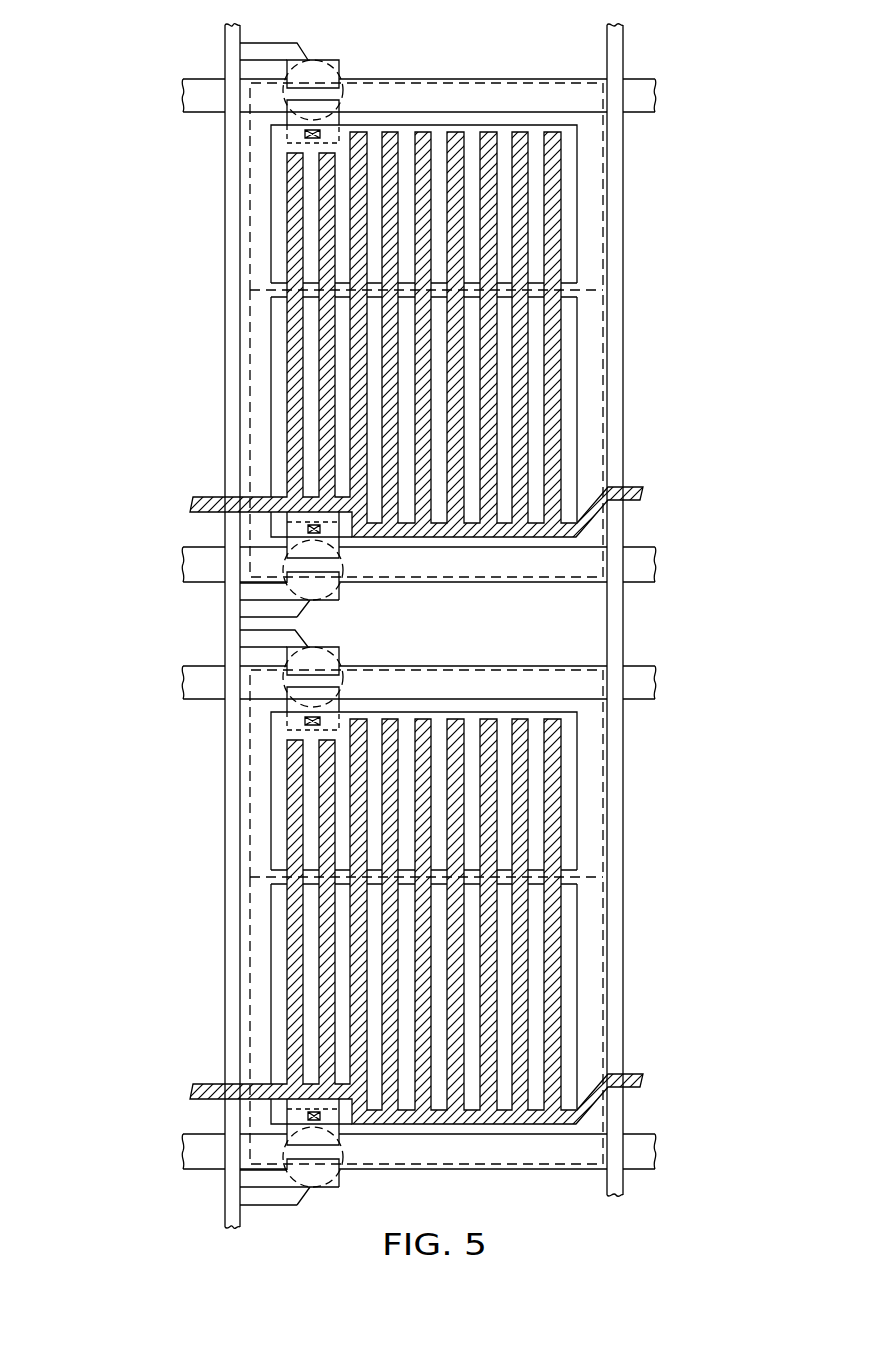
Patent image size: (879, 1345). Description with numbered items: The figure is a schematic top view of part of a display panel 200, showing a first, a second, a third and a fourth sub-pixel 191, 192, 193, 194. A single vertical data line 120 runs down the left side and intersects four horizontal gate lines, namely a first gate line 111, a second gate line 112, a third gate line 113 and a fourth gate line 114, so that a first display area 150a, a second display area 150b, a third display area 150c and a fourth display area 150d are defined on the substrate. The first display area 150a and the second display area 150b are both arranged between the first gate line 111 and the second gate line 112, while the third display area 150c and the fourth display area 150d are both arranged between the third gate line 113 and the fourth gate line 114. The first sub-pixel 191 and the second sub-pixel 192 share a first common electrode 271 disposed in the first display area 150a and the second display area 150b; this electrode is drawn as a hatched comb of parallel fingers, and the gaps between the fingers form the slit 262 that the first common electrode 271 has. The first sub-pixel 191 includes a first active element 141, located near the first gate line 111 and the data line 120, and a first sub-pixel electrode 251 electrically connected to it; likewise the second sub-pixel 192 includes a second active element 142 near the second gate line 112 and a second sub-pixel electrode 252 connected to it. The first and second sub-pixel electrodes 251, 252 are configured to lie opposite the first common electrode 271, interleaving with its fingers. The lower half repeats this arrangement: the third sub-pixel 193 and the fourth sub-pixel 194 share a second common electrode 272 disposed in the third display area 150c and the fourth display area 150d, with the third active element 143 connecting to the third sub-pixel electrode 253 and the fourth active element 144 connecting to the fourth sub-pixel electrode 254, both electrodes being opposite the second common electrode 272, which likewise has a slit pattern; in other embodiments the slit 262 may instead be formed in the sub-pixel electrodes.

The display panel 200 is at (90, 47).
The data line 120 is at (232, 32).
The first gate line 111 is at (655, 97).
The second gate line 112 is at (655, 567).
The third gate line 113 is at (655, 684).
The fourth gate line 114 is at (655, 1154).
The first active element 141 is at (288, 97).
The second active element 142 is at (283, 567).
The third active element 143 is at (283, 677).
The fourth active element 144 is at (283, 1152).
The first display area 150a is at (603, 202).
The second display area 150b is at (603, 443).
The third display area 150c is at (603, 789).
The fourth display area 150d is at (603, 1047).
The first sub-pixel 191 is at (577, 255).
The second sub-pixel 192 is at (577, 391).
The third sub-pixel 193 is at (577, 841).
The fourth sub-pixel 194 is at (577, 1008).
The first sub-pixel electrode 251 is at (277, 215).
The second sub-pixel electrode 252 is at (277, 443).
The third sub-pixel electrode 253 is at (277, 848).
The fourth sub-pixel electrode 254 is at (277, 1028).
The slit 262 is at (312, 354).
The first common electrode 271 is at (553, 343).
The second common electrode 272 is at (553, 960).